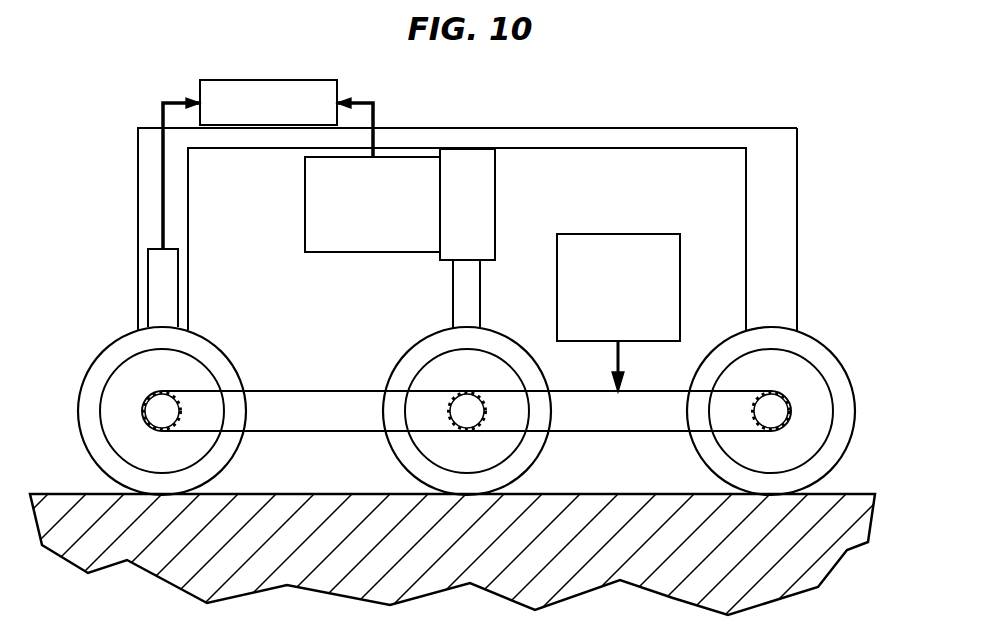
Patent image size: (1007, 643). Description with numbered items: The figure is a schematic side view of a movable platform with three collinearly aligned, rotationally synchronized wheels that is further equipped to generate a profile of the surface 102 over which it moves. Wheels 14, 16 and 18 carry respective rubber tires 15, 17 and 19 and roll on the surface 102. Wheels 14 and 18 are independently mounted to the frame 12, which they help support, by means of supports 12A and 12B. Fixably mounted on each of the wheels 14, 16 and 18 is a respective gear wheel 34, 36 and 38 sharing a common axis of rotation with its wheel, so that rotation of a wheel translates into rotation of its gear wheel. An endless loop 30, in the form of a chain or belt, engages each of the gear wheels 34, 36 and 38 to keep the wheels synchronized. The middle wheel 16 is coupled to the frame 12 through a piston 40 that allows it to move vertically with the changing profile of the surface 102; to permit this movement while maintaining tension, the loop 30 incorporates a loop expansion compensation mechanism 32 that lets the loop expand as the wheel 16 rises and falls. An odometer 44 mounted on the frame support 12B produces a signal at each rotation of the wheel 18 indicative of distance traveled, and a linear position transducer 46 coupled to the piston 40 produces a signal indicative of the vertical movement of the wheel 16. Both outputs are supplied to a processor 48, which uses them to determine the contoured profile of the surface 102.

The frame 12 is at (596, 128).
The support 12A is at (785, 216).
The support 12B is at (182, 203).
The wheel 14 is at (815, 388).
The rubber tire 15 is at (805, 348).
The wheel 16 is at (425, 377).
The rubber tire 17 is at (439, 340).
The wheel 18 is at (207, 377).
The rubber tire 19 is at (197, 338).
The endless loop 30 is at (318, 391).
The loop expansion compensation mechanism 32 is at (620, 233).
The gear wheel 34 is at (775, 417).
The gear wheel 36 is at (458, 418).
The gear wheel 38 is at (172, 418).
The piston 40 is at (488, 183).
The odometer 44 is at (168, 267).
The linear position transducer 46 is at (365, 253).
The processor 48 is at (264, 79).
The surface 102 is at (617, 493).